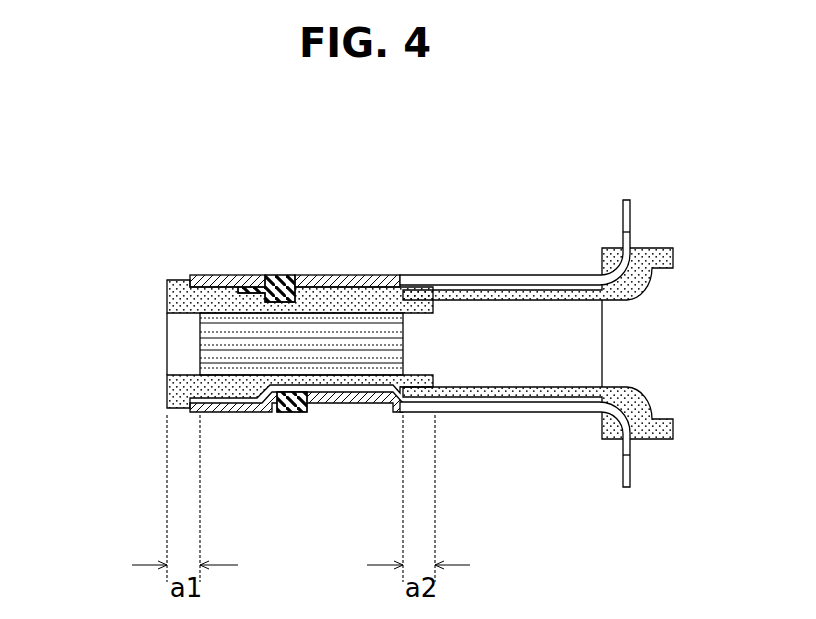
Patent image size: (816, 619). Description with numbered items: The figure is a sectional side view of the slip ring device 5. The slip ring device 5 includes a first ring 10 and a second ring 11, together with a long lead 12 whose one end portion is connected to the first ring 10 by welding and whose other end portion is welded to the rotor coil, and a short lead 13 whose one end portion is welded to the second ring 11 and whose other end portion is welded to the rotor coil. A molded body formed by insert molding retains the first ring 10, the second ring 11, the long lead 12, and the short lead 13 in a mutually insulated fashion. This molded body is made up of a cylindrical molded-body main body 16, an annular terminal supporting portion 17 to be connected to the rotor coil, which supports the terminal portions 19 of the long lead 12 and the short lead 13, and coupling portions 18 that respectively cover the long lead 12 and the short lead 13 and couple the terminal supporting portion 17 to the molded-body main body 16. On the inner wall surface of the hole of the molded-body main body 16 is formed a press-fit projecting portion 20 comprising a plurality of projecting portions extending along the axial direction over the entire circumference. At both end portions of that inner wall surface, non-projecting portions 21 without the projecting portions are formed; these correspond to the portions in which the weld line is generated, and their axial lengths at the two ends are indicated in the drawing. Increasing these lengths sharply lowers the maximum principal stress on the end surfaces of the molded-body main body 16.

The slip ring device 5 is at (581, 336).
The first ring 10 is at (215, 275).
The second ring 11 is at (350, 275).
The long lead 12 is at (550, 412).
The short lead 13 is at (515, 290).
The molded-body main body 16 is at (165, 293).
The terminal supporting portion 17 is at (675, 256).
The coupling portions 18 is at (493, 404).
The terminal portions 19 is at (623, 200).
The press-fit projecting portion 20 is at (223, 358).
The non-projecting portions 21 is at (413, 342).